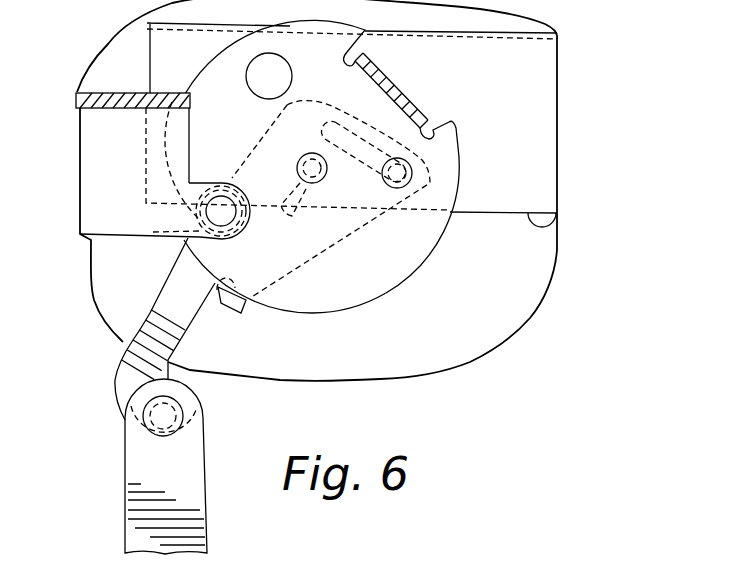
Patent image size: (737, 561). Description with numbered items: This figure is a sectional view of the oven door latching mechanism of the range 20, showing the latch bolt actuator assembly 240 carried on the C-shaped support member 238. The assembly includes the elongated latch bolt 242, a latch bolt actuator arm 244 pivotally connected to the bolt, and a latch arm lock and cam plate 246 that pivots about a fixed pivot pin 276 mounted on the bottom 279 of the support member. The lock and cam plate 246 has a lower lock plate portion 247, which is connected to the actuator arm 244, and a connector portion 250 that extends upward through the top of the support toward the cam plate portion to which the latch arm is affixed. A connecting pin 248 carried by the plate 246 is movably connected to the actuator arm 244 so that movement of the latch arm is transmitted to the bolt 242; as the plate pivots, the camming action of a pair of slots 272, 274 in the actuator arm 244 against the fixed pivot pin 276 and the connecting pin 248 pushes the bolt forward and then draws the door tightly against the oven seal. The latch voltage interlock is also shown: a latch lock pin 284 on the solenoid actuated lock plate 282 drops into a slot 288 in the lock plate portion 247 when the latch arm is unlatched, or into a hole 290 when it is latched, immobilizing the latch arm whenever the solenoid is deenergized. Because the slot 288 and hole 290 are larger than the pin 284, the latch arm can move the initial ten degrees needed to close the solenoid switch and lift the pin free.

The range 20 is at (548, 287).
The C-shaped support member 238 is at (557, 226).
The latch bolt actuator assembly 240 is at (423, 277).
The latch bolt 242 is at (140, 498).
The latch bolt actuator arm 244 is at (156, 297).
The latch arm lock and cam plate 246 is at (460, 140).
The lower lock plate portion 247 is at (337, 303).
The pin 248 is at (412, 175).
The connector portion 250 is at (398, 97).
The slot 272 is at (297, 217).
The slot 274 is at (355, 153).
The fixed pivot pin 276 is at (301, 158).
The bottom 279 is at (540, 201).
The solenoid actuated lock plate 282 is at (86, 99).
The latch lock pin 284 is at (158, 231).
The slot 288 is at (200, 208).
The hole 290 is at (262, 63).